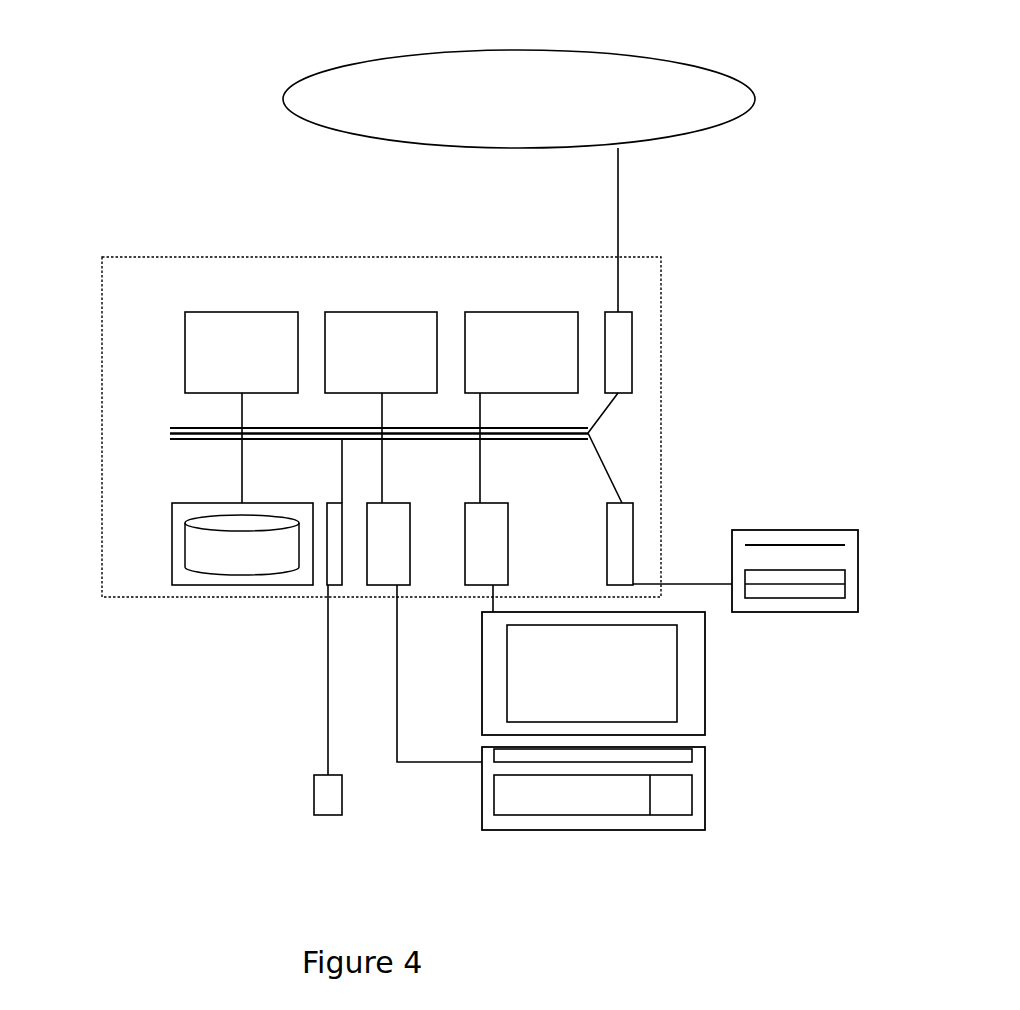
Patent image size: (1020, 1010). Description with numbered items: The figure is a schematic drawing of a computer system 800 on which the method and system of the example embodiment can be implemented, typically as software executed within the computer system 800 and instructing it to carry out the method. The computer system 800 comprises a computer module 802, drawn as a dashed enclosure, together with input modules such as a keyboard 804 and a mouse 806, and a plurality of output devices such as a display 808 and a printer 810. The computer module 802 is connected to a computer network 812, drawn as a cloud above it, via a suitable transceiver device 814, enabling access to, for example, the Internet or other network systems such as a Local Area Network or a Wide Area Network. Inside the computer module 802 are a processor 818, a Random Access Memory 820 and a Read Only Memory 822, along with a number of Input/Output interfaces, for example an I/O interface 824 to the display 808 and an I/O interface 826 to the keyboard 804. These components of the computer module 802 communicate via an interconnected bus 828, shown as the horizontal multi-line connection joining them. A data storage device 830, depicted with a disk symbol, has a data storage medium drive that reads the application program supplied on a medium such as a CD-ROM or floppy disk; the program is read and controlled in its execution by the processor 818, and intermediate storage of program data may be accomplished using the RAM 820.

The computer system 800 is at (150, 877).
The computer module 802 is at (442, 427).
The keyboard 804 is at (593, 832).
The mouse 806 is at (301, 745).
The display 808 is at (653, 673).
The printer 810 is at (795, 527).
The computer network 812 is at (519, 82).
The transceiver device 814 is at (671, 362).
The processor 818 is at (521, 357).
The Random Access Memory (RAM) 820 is at (241, 356).
The Read Only Memory (ROM) 822 is at (381, 356).
The I/O interface 824 is at (460, 595).
The I/O interface 826 is at (412, 632).
The interconnected bus 828 is at (319, 448).
The data storage device 830 is at (229, 595).